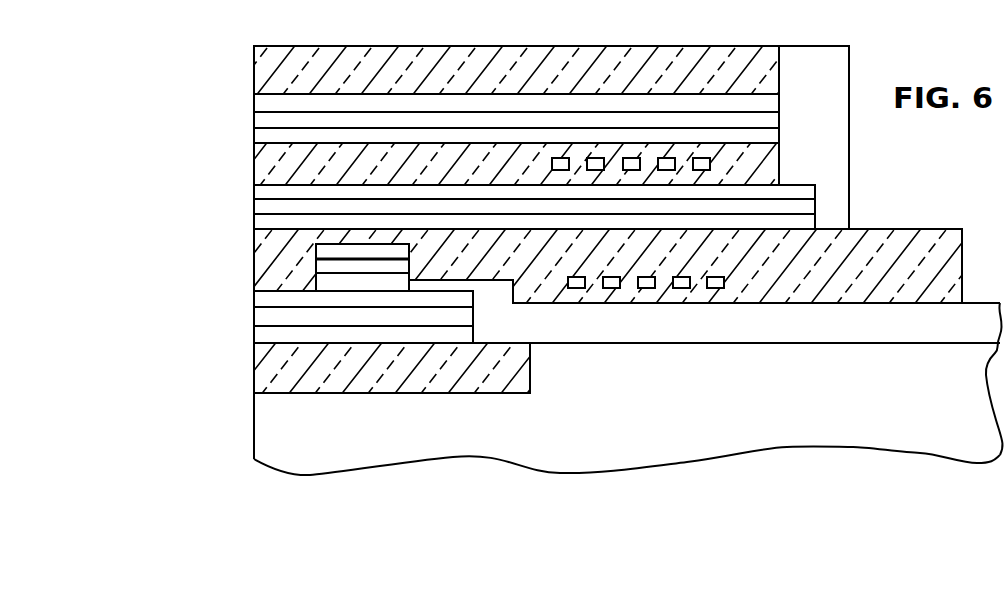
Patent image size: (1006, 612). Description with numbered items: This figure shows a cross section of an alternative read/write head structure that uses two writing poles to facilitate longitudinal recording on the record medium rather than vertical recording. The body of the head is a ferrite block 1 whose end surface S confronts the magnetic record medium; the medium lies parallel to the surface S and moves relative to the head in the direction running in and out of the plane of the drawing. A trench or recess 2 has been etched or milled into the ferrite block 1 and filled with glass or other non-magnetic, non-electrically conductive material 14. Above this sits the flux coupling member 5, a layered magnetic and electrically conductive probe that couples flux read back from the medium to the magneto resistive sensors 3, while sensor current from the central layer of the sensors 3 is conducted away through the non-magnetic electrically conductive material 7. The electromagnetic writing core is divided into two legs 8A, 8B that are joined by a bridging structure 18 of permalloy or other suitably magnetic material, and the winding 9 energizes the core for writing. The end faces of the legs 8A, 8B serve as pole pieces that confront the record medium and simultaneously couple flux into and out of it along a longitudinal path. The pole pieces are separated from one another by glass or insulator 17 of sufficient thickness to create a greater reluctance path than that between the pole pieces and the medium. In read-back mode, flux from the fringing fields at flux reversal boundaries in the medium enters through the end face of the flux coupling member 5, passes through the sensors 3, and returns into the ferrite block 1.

The ferrite block 1 is at (927, 433).
The trench or recess 2 is at (530, 372).
The magneto resistive sensors 3 is at (297, 266).
The flux coupling member 5 is at (252, 292).
The non-magnetic electrically conductive material 7 is at (643, 328).
The first core leg 8A is at (252, 186).
The second core leg 8B is at (252, 95).
The winding 9 is at (633, 158).
The non-magnetic non-electrically conductive material 14 is at (263, 371).
The glass or insulator 17 is at (231, 271).
The bridging structure 18 is at (822, 60).
The end surface S is at (263, 430).